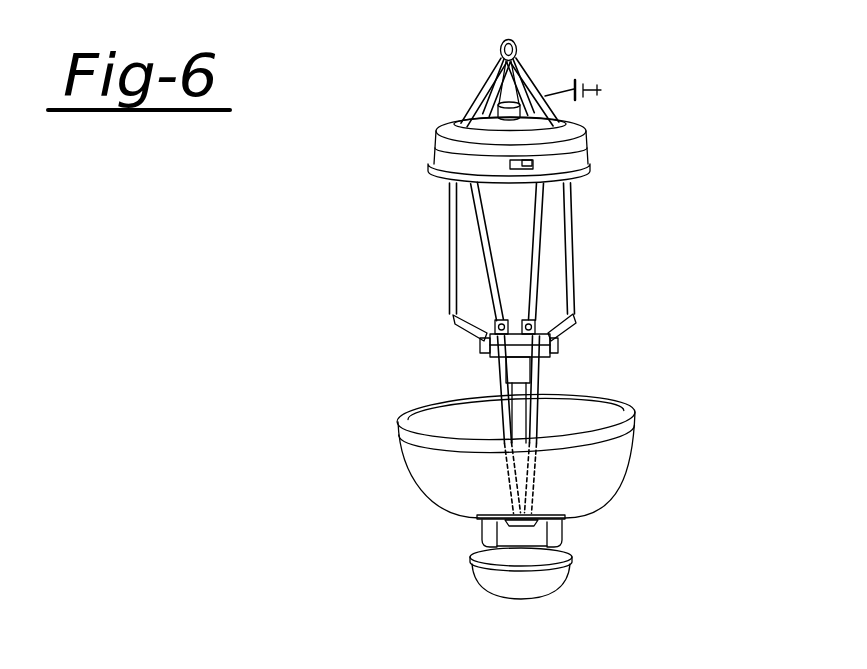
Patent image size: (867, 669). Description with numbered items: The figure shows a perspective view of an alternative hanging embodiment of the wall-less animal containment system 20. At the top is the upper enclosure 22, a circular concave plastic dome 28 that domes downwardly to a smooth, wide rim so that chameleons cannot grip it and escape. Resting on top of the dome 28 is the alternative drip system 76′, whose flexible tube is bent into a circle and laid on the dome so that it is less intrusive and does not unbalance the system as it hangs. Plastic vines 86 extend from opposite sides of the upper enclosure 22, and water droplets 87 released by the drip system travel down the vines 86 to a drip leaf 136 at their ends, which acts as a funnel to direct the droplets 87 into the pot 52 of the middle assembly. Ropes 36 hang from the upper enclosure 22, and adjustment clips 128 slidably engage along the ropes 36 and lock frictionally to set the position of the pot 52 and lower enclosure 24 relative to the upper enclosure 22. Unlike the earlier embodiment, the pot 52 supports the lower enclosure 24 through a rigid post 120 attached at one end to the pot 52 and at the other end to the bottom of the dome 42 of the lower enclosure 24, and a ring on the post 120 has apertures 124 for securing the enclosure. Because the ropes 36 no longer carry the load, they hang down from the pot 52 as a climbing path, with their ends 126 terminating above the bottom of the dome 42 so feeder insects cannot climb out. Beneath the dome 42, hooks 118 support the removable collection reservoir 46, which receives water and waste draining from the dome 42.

The hanging system 20 is at (708, 151).
The upper enclosure 22 is at (600, 122).
The drip system 76′ is at (588, 140).
The dome 28 is at (582, 174).
The plastic vines 86 is at (448, 276).
The water droplets 87 is at (447, 233).
The ropes 36 is at (566, 258).
The drip leaf 136 is at (467, 337).
The adjustment clips 128 is at (559, 343).
The pot 52 is at (543, 376).
The rigid post 120 is at (518, 418).
The lower enclosure 24 is at (678, 378).
The dome 42 is at (428, 465).
The rope ends 126 is at (537, 483).
The apertures 124 is at (480, 516).
The hooks 118 is at (561, 534).
The collection reservoir 46 is at (482, 590).